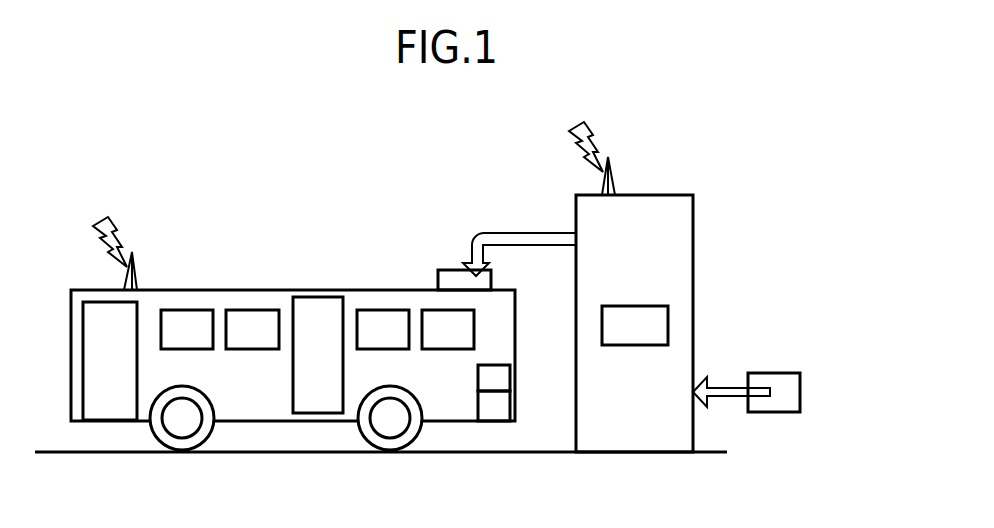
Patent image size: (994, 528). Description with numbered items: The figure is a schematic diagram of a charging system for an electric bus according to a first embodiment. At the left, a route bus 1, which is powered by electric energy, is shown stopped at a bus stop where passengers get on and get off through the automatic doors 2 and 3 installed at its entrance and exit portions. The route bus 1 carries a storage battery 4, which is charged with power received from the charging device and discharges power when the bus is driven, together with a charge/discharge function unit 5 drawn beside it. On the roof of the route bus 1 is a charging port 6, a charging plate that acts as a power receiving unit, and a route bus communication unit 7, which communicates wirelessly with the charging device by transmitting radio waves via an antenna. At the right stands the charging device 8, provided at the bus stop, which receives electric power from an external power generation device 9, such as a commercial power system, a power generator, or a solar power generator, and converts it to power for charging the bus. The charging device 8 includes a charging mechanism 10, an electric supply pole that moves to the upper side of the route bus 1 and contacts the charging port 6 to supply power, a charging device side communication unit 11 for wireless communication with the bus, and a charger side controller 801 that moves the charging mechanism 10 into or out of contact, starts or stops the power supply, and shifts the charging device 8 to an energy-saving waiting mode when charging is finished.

The route bus 1 is at (278, 290).
The door 2 is at (108, 412).
The door 3 is at (320, 400).
The storage battery 4 is at (500, 410).
The charge/discharge function unit 5 is at (500, 377).
The charging port 6 is at (452, 277).
The route bus communication unit 7 is at (137, 280).
The charging device 8 is at (693, 248).
The charger side controller 801 is at (668, 327).
The external power generation device 9 is at (800, 390).
The charging mechanism 10 is at (518, 238).
The charging device side communication unit 11 is at (613, 182).